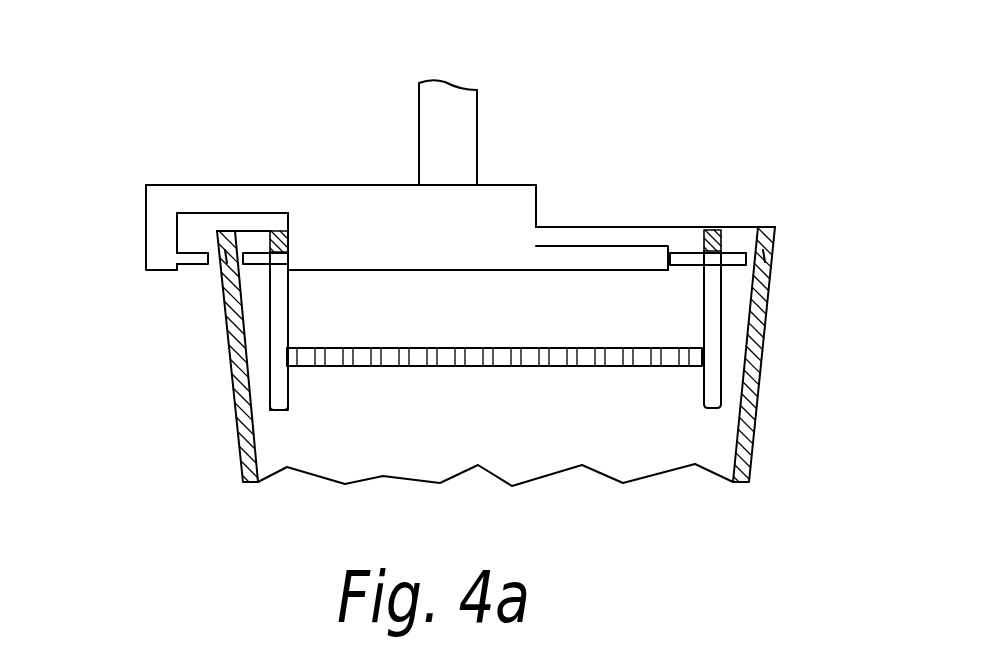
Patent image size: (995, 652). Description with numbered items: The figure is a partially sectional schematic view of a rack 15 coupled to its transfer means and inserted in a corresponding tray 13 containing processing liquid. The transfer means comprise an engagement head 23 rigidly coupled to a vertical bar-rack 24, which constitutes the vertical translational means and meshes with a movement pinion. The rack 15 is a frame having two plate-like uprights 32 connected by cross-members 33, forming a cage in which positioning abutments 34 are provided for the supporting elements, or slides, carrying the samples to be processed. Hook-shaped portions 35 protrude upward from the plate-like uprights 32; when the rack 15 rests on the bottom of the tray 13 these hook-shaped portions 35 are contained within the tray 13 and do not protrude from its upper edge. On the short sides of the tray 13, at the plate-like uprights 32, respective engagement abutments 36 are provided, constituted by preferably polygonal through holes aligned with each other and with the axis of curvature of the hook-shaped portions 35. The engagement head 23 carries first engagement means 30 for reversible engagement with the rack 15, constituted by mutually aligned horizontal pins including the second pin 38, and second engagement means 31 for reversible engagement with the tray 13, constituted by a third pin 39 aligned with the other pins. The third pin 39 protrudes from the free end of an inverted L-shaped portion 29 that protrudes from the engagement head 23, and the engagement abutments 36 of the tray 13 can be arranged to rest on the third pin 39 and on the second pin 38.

The tray 13 is at (748, 342).
The rack 15 is at (738, 393).
The engagement head 23 is at (374, 176).
The vertical bar-rack 24 is at (437, 132).
The inverted L-shaped portion 29 is at (330, 203).
The first engagement means 30 is at (685, 238).
The second engagement means 31 is at (184, 242).
The plate-like upright 32 is at (283, 390).
The cross-member 33 is at (418, 366).
The positioning abutment 34 is at (643, 366).
The hook-shaped portion 35 is at (278, 238).
The engagement abutment 36 is at (230, 263).
The second pin 38 is at (683, 258).
The third pin 39 is at (193, 258).